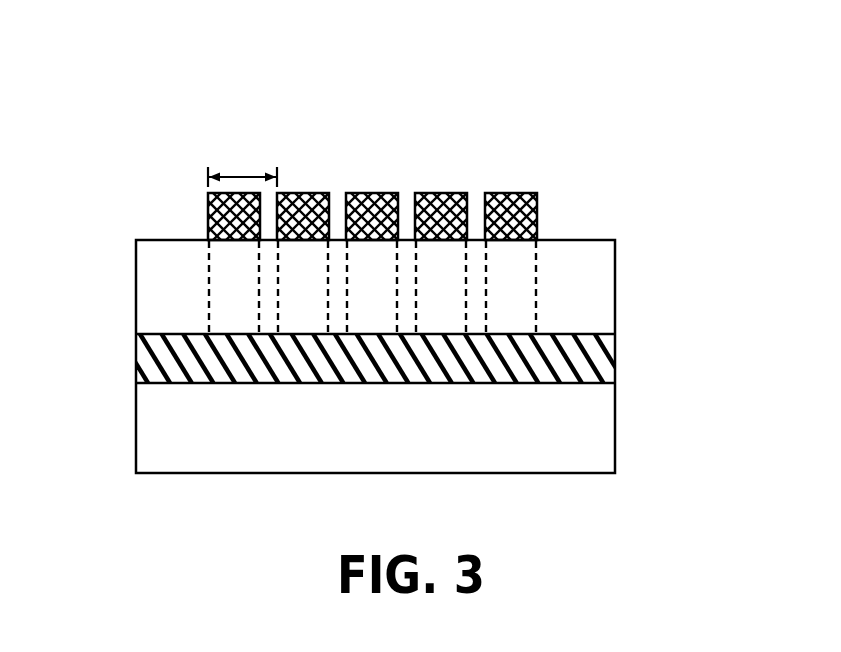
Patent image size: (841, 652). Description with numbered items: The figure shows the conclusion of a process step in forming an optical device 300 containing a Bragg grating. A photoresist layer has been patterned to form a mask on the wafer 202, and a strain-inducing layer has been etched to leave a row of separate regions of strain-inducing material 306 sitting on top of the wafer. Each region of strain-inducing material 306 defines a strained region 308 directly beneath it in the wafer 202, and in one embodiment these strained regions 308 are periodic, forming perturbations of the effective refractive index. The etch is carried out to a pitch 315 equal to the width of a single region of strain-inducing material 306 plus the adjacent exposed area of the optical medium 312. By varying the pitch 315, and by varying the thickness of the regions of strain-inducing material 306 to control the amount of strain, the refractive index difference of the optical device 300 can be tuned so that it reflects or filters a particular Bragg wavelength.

The optical device 300 is at (641, 42).
The wafer 202 is at (662, 162).
The regions of strain-inducing material 306 is at (208, 208).
The strained regions 308 is at (372, 287).
The optical medium 312 is at (136, 277).
The pitch 315 is at (240, 176).